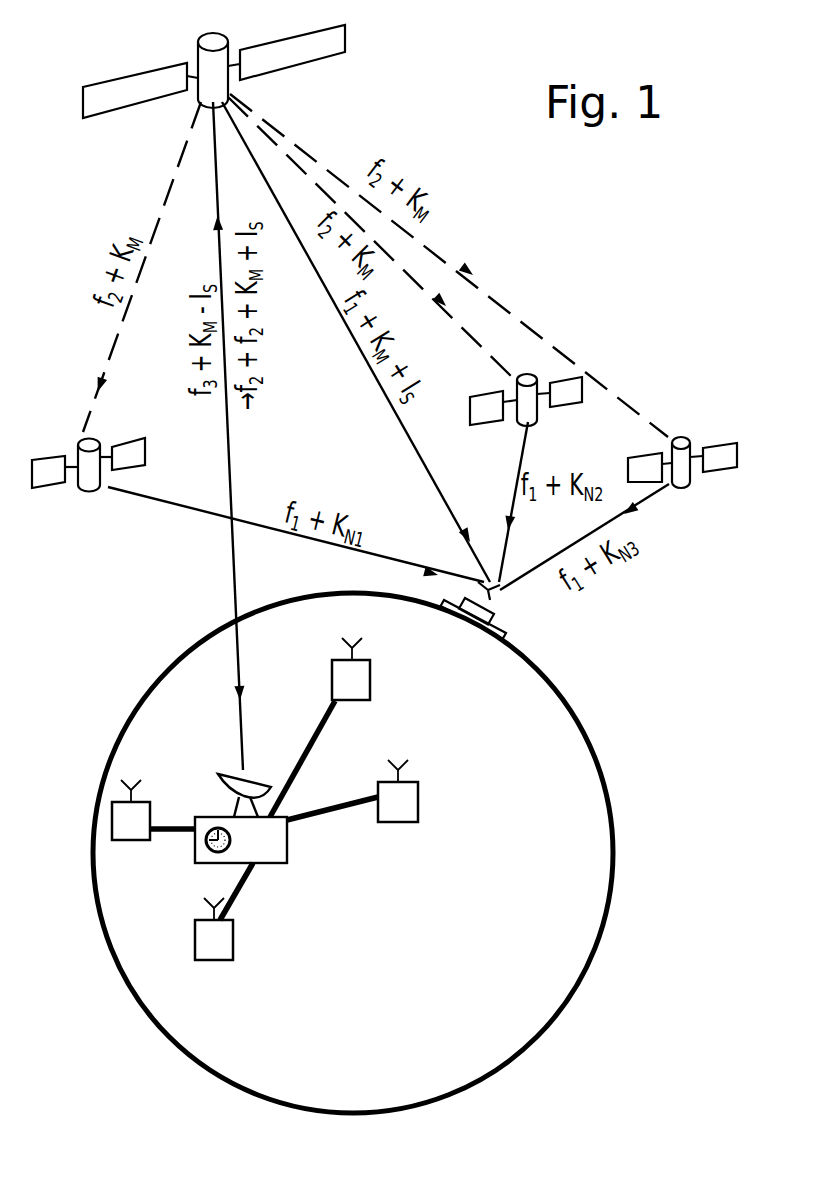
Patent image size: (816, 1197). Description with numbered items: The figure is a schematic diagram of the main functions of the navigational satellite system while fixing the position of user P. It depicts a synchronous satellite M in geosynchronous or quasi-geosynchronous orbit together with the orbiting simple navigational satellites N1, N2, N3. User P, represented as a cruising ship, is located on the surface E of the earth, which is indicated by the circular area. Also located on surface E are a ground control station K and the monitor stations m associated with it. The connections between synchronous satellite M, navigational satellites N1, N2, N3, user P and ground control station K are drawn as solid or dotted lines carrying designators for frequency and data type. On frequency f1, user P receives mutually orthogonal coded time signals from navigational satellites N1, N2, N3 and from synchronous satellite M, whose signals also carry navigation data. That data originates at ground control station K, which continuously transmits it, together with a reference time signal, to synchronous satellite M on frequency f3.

The synchronous satellite M is at (214, 59).
The navigational satellite N1 is at (88, 485).
The navigational satellite N2 is at (530, 411).
The navigational satellite N3 is at (682, 445).
The user P is at (485, 610).
The ground control station K is at (236, 806).
The surface of the earth E is at (353, 853).
The monitor stations m is at (265, 799).